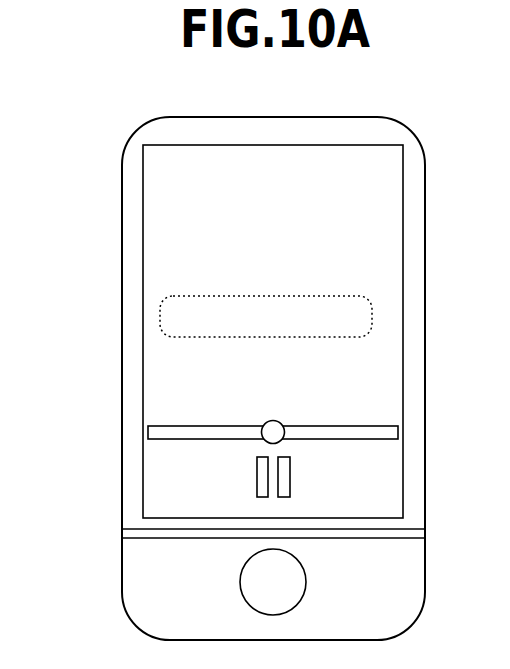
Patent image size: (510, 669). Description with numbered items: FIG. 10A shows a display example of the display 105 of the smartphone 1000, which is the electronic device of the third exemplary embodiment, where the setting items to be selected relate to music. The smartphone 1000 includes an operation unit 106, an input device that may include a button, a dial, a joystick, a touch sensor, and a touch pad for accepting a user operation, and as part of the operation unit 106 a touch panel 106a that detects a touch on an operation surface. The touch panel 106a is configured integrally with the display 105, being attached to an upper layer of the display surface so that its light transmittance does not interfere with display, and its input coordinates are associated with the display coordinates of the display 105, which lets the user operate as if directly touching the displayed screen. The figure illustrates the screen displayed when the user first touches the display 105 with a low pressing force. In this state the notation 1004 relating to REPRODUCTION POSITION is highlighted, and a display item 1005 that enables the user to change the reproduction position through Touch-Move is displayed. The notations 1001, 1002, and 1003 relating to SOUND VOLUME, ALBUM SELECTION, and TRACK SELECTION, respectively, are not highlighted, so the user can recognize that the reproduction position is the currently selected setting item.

The smartphone 1000 is at (432, 114).
The display 105 is at (277, 293).
The operation unit 106 is at (273, 331).
The touch panel 106a is at (316, 165).
The notation relating to SOUND VOLUME 1001 is at (161, 192).
The notation relating to ALBUM SELECTION 1002 is at (161, 234).
The notation relating to TRACK SELECTION 1003 is at (161, 277).
The notation relating to REPRODUCTION POSITION 1004 is at (158, 319).
The display item 1005 is at (160, 446).